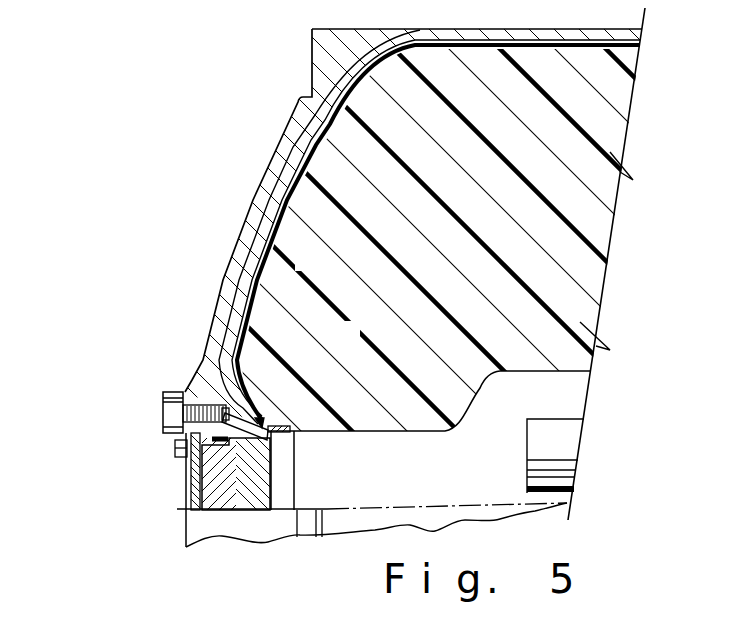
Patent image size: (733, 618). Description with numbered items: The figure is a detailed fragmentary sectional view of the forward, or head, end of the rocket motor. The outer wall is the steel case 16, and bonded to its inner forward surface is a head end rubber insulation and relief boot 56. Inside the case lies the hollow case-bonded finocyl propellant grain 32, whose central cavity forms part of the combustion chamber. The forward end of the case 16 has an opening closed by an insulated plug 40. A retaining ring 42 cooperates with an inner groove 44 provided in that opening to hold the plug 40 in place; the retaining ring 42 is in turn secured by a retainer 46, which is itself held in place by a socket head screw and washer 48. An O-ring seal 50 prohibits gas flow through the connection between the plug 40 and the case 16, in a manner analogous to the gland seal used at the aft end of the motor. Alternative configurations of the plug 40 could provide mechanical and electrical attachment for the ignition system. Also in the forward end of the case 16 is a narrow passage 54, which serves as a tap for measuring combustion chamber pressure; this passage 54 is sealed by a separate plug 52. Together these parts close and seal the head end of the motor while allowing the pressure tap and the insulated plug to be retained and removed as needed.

The steel case 16 is at (520, 31).
The propellant grain 32 is at (342, 145).
The head end rubber insulation and relief boot 56 is at (262, 261).
The narrow passage 54 is at (268, 400).
The plug 52 is at (182, 391).
The inner groove 44 is at (185, 432).
The socket head screw and washer 48 is at (180, 445).
The retainer 46 is at (188, 462).
The retaining ring 42 is at (213, 486).
The insulated plug 40 is at (193, 503).
The O-ring seal 50 is at (272, 467).